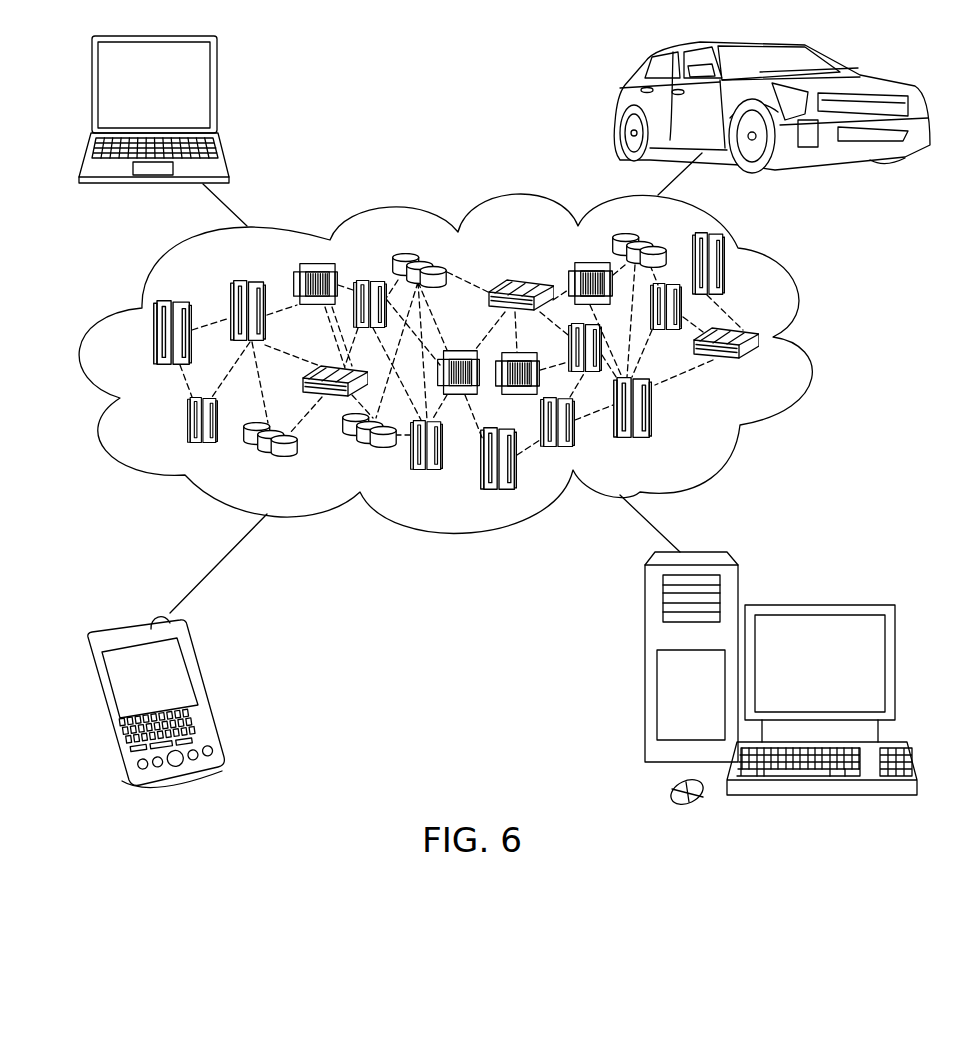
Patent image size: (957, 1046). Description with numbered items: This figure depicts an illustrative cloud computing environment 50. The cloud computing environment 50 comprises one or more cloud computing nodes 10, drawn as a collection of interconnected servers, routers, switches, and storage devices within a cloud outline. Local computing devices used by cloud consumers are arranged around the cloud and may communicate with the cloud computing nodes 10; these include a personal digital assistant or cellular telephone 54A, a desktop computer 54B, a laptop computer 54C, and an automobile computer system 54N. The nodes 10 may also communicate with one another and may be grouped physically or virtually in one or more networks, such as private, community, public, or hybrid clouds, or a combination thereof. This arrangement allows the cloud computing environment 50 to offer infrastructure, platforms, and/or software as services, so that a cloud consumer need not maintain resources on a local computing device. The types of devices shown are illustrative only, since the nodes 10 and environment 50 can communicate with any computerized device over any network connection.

The cloud computing nodes 10 is at (766, 371).
The cloud computing environment 50 is at (808, 343).
The personal digital assistant (PDA) or cellular telephone 54A is at (210, 692).
The desktop computer 54B is at (815, 605).
The laptop computer 54C is at (217, 90).
The automobile computer system 54N is at (617, 107).